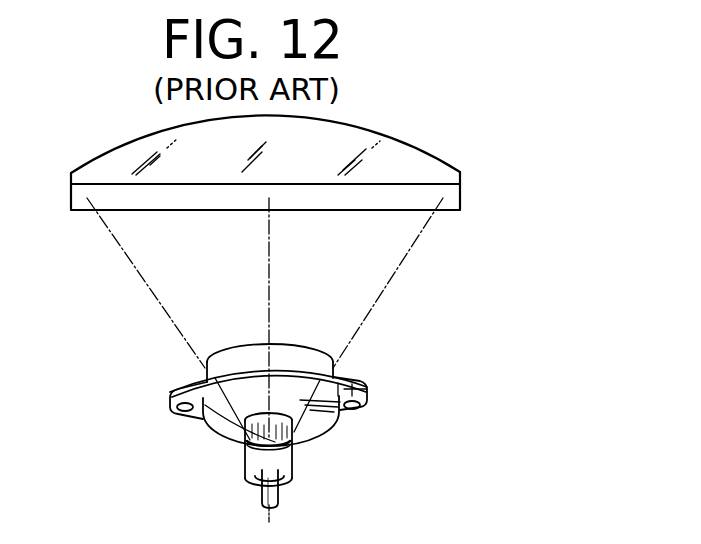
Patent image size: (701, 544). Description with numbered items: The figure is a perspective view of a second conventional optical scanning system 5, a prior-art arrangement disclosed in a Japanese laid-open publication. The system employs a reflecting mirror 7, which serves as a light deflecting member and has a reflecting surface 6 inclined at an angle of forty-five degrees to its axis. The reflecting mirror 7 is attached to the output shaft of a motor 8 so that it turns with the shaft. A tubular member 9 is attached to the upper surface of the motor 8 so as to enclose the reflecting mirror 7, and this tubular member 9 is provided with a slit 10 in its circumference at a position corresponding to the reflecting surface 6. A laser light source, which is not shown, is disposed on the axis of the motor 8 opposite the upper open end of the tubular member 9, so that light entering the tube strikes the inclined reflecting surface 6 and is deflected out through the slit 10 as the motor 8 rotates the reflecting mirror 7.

The optical scanning system 5 is at (378, 388).
The reflecting surface 6 is at (252, 462).
The reflecting mirror 7 is at (230, 425).
The motor 8 is at (333, 368).
The tubular member 9 is at (293, 475).
The slit 10 is at (291, 445).